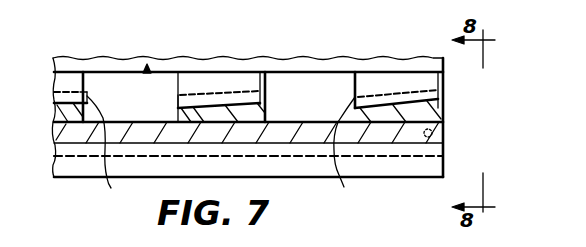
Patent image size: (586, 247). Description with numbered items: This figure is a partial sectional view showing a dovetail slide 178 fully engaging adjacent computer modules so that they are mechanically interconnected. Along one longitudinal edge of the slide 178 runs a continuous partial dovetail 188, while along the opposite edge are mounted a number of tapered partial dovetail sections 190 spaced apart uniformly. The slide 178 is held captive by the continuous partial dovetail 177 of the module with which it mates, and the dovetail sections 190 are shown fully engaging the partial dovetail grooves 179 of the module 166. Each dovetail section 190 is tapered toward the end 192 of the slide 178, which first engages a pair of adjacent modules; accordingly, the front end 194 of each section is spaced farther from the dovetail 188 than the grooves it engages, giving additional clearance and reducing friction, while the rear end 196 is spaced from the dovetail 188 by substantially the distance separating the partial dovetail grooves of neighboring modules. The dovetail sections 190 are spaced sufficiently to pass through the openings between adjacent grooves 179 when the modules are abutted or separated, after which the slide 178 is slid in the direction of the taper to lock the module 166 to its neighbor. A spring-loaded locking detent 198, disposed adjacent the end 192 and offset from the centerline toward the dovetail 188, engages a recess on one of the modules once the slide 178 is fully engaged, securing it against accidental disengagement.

The module 166 is at (278, 58).
The dovetail slide 178 is at (147, 66).
The tapered partial dovetail sections 190 is at (67, 78).
The front end of dovetail section 194 is at (88, 83).
The rear end of dovetail section 196 is at (176, 86).
The continuous partial dovetail of module 177 is at (77, 137).
The partial dovetail grooves 179 is at (111, 188).
The continuous partial dovetail 188 is at (380, 172).
The end of slide 192 is at (446, 163).
The spring-loaded locking detent 198 is at (433, 133).